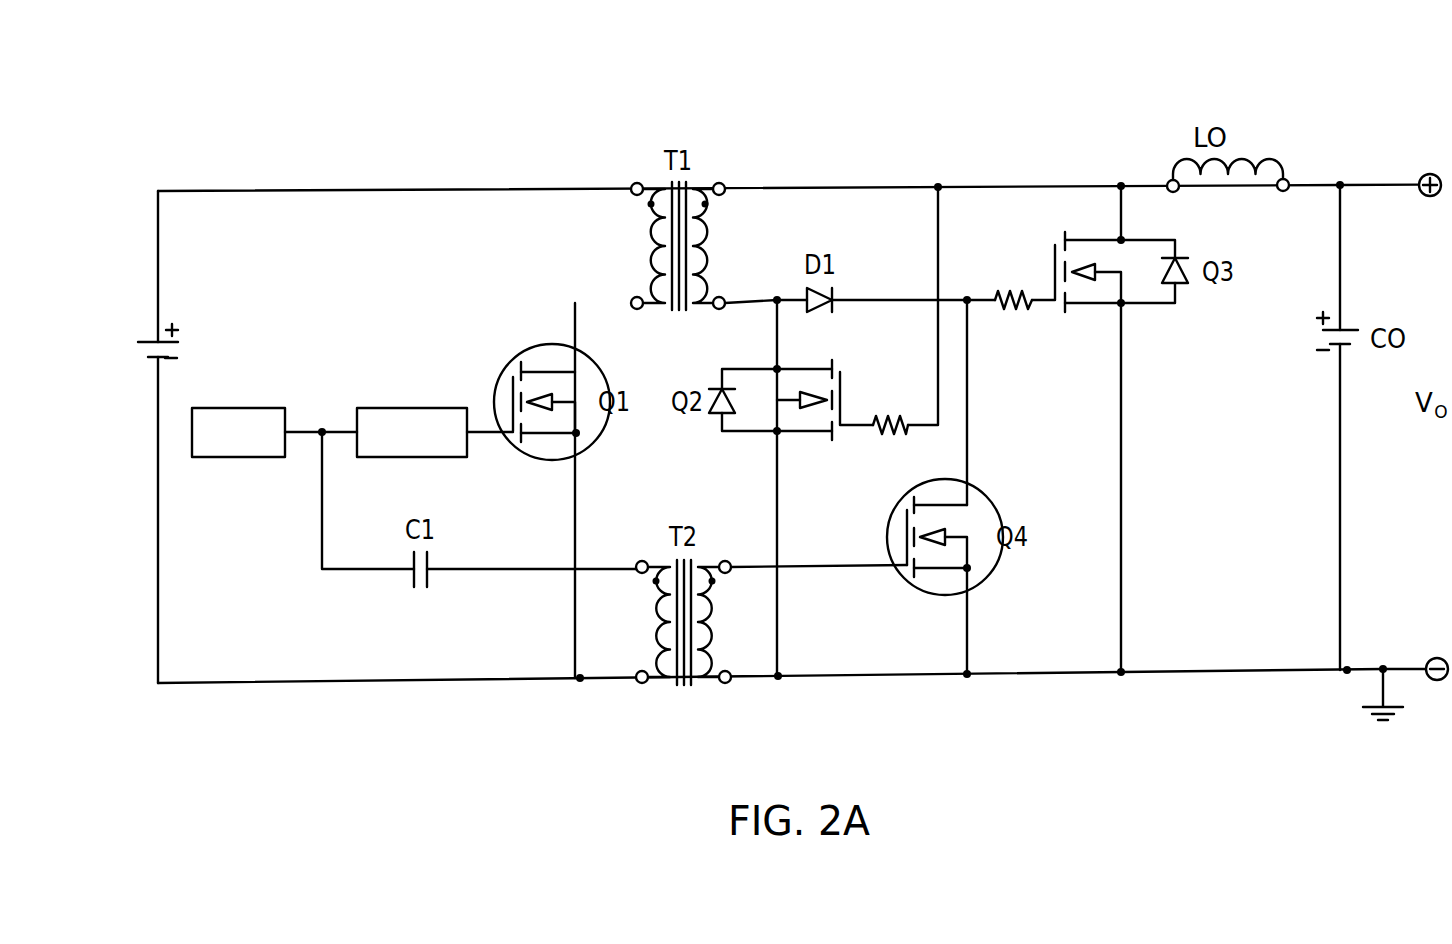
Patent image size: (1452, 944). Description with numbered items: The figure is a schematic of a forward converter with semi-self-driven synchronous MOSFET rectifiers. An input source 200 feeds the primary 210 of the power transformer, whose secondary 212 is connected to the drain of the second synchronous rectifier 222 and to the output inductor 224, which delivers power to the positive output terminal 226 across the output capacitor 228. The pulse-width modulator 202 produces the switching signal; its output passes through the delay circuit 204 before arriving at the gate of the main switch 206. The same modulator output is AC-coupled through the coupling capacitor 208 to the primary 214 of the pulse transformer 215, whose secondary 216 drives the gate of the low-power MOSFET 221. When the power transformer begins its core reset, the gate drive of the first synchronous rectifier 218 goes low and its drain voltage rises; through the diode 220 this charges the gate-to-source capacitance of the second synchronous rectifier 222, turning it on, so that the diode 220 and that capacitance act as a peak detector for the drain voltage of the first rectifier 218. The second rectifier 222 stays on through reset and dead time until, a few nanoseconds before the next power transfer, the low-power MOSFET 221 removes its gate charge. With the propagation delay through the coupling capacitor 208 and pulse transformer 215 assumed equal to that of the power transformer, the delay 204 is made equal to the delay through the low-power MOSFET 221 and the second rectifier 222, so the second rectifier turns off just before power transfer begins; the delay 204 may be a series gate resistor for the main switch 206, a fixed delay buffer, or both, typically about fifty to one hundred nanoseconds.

The input voltage source 200 is at (186, 340).
The PWM 202 is at (256, 458).
The delay circuit 204 is at (413, 458).
The Q1 206 is at (526, 346).
The capacitor C1 208 is at (413, 600).
The transformer T1 primary winding 210 is at (634, 176).
The secondary of power transformer T1 212 is at (723, 176).
The primary of T2 214 is at (638, 698).
The pulse transformer T2 215 is at (684, 697).
The secondary of pulse transformer T2 216 is at (732, 700).
The synchronous MOSFET rectifier Q2 218 is at (720, 446).
The diode D1 220 is at (796, 289).
The low-power MOSFET Q4 221 is at (905, 598).
The synchronous MOSFET rectifier Q3 222 is at (1153, 313).
The inductor LO 224 is at (1163, 173).
The positive output terminal 226 is at (1421, 177).
The output capacitor CO 228 is at (1354, 323).